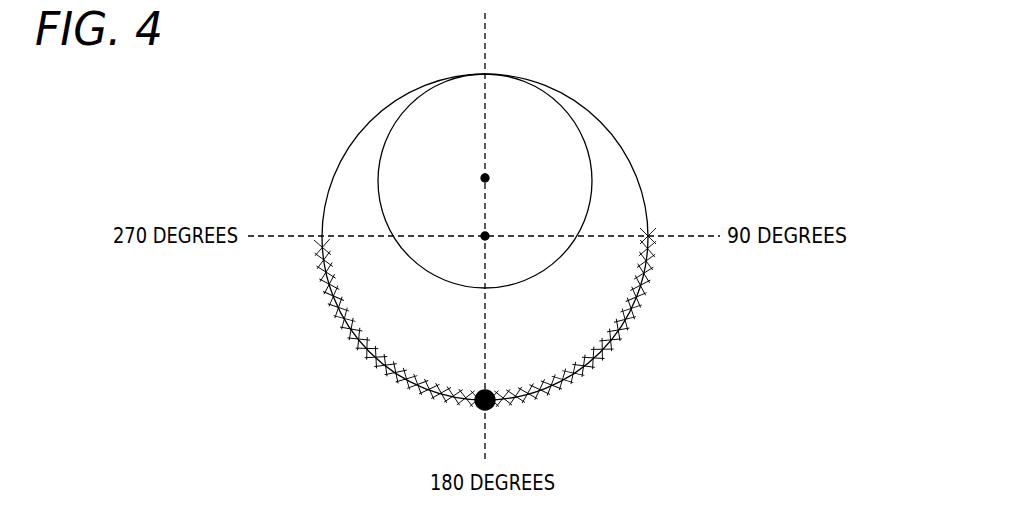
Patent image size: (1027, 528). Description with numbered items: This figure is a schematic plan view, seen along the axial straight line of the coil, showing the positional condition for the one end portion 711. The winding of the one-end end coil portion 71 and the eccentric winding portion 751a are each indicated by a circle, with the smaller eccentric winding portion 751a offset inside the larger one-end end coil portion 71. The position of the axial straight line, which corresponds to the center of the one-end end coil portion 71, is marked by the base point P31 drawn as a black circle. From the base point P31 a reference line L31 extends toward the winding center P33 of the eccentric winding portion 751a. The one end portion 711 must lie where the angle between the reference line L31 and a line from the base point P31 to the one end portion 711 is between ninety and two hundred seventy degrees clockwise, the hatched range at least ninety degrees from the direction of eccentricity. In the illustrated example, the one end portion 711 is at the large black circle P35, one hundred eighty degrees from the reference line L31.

The one-end end coil portion 71 is at (638, 175).
The eccentric winding portion 751a is at (585, 138).
The reference line L31 is at (487, 52).
The winding center of the eccentric winding portion P33 is at (487, 177).
The base point P31 is at (488, 238).
The position of the one end portion P35 is at (490, 407).
The one end portion 711 is at (485, 317).